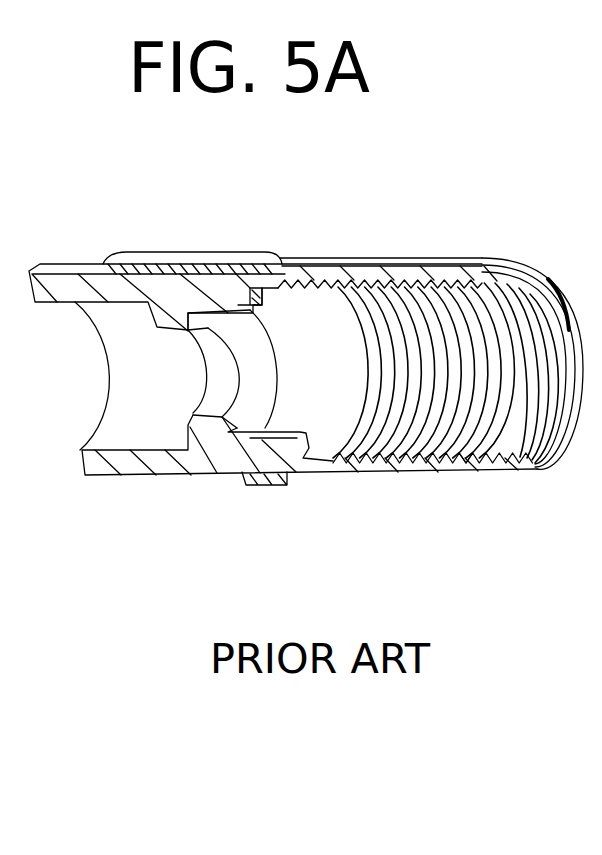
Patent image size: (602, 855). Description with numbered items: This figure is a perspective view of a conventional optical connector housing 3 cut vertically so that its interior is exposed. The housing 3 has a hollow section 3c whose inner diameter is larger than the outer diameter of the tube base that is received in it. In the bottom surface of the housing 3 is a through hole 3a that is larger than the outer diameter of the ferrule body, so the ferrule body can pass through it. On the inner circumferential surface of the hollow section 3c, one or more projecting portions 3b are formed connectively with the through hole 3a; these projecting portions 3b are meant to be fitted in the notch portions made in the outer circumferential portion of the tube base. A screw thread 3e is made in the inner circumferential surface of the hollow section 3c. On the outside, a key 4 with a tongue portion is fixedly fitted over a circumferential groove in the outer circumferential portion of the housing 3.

The optical connector housing 3 is at (100, 483).
The through hole 3a is at (205, 410).
The projecting portion 3b is at (258, 320).
The hollow section 3c is at (421, 392).
The screw thread 3e is at (470, 458).
The key 4 is at (150, 262).